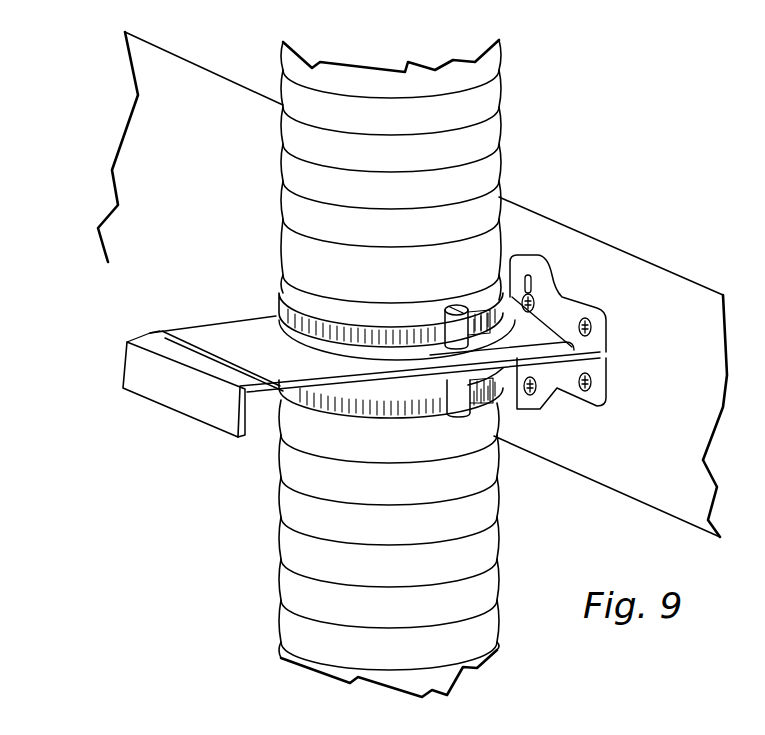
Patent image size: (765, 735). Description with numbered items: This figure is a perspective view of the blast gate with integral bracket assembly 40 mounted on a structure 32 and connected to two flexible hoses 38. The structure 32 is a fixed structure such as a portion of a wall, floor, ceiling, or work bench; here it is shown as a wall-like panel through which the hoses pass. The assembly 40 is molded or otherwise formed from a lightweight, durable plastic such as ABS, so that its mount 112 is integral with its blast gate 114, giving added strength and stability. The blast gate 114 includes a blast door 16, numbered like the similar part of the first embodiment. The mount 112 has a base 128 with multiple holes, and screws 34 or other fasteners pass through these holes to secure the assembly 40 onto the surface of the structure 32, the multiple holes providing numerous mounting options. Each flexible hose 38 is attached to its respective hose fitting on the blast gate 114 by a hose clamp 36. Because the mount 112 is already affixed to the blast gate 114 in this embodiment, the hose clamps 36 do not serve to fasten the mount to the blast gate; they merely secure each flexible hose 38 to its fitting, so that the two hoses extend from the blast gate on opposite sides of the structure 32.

The structure 32 is at (192, 83).
The flexible hose 38 is at (468, 71).
The hose clamp 36 is at (285, 305).
The blast gate with integral bracket assembly 40 is at (120, 406).
The blast door 16 is at (200, 400).
The blast gate 114 is at (238, 340).
The base 128 is at (564, 323).
The mount 112 is at (522, 273).
The screw 34 is at (581, 391).